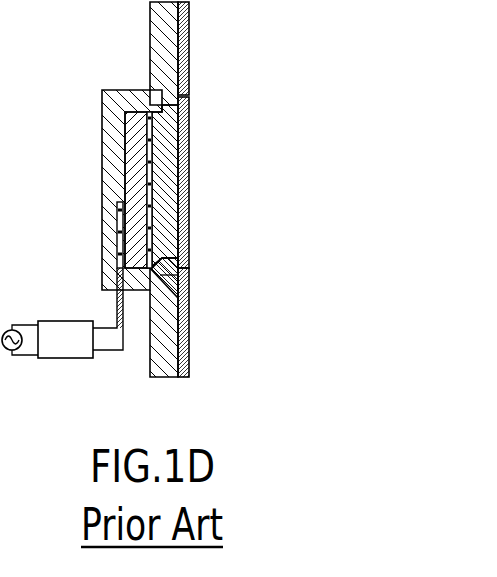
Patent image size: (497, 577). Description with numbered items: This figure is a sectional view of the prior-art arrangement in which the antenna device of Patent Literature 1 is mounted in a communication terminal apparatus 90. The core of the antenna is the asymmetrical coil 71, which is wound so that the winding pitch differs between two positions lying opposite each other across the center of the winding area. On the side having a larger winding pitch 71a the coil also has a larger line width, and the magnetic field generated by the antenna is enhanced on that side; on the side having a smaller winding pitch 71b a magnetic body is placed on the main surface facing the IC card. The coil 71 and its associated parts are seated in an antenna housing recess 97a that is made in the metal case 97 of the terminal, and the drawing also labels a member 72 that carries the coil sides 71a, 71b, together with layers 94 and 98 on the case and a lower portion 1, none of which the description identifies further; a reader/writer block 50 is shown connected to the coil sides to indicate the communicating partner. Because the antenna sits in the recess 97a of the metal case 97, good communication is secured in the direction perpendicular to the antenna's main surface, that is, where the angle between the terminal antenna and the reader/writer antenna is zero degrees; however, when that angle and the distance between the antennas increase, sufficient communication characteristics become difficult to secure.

The substrate 1 is at (190, 350).
The read/write circuit 50 is at (66, 321).
The coil 71 is at (76, 231).
The side having a larger winding pitch 71a is at (147, 178).
The side having a smaller winding pitch 71b is at (120, 228).
The head slider body 72 is at (118, 133).
The communication terminal apparatus 90 is at (81, 202).
The upper layer 94 is at (190, 33).
The metal case 97 is at (150, 35).
The antenna housing recess 97a is at (165, 263).
The recording layer 98 is at (190, 148).